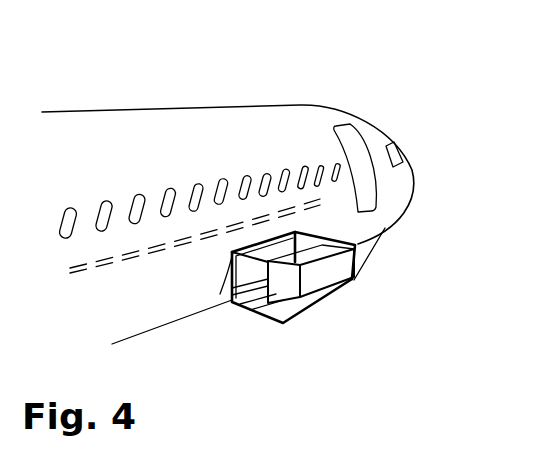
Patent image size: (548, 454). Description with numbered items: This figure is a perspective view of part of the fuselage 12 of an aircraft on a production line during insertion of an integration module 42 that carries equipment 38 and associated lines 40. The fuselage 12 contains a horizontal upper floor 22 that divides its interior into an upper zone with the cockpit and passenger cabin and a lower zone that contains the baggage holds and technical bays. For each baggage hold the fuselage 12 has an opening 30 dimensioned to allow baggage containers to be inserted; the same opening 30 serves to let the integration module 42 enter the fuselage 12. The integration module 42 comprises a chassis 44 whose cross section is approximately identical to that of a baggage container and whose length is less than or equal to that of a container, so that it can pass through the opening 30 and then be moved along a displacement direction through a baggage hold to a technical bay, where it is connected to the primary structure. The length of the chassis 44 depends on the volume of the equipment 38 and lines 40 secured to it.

The fuselage 12 is at (133, 105).
The horizontal upper floor 22 is at (105, 276).
The opening 30 is at (290, 226).
The equipment 38 is at (327, 325).
The line 40 is at (324, 292).
The integration module 42 is at (368, 297).
The chassis 44 is at (244, 322).